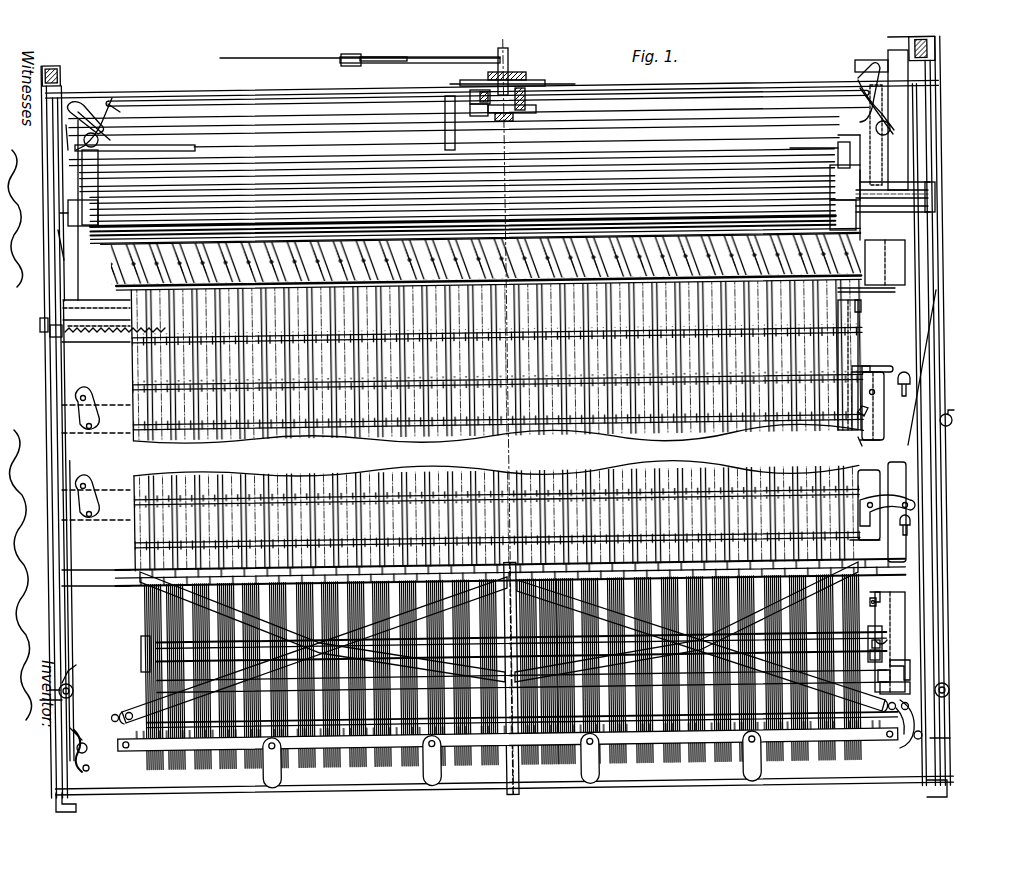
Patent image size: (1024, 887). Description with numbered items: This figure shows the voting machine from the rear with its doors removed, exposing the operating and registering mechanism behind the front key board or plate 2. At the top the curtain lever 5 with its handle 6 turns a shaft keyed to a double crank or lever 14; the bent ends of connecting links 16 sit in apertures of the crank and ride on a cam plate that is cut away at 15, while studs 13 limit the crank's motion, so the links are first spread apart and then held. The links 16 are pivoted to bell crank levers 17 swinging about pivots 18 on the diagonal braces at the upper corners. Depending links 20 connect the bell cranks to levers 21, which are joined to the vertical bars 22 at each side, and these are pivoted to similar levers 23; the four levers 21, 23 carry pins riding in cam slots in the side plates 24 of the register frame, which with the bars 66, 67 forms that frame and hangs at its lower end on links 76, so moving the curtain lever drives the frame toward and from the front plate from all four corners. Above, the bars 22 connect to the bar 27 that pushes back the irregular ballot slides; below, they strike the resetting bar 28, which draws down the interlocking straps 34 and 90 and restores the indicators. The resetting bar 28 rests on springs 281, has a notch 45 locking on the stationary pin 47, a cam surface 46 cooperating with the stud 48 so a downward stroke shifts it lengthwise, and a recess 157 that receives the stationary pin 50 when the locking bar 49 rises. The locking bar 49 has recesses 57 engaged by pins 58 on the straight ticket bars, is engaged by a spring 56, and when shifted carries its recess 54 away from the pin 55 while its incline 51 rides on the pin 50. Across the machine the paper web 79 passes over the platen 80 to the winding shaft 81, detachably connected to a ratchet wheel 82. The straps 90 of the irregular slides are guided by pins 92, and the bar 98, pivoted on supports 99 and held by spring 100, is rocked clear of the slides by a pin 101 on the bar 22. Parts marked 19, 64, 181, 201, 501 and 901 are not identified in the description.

The key board or plate 2 is at (330, 146).
The curtain lever 5 is at (468, 423).
The handle 6 is at (352, 76).
The studs 13 is at (527, 95).
The double crank or lever 14 is at (512, 115).
The cutaway portion 15 is at (540, 110).
The connecting rods or links 16 is at (392, 104).
The bell crank levers 17 is at (118, 124).
The pivot 18 is at (876, 126).
The rod 19 is at (138, 101).
The depending links 20 is at (920, 251).
The levers 21 is at (55, 355).
The vertically-extending rods or bars 22 is at (930, 355).
The levers 23 is at (70, 510).
The vertical sides or plates 24 is at (930, 410).
The bar 27 is at (706, 96).
The resetting bar 28 is at (504, 699).
The rods or straps 34 is at (150, 683).
The notch or recess 45 is at (55, 685).
The inclined or cam surface 46 is at (915, 724).
The stationary pin or roller 47 is at (74, 690).
The stud or collar 48 is at (950, 690).
The locking bar 49 is at (880, 610).
The stationary pin 50 is at (892, 663).
The incline 51 is at (870, 414).
The recess 54 is at (884, 592).
The pin 55 is at (893, 595).
The spring 56 is at (860, 405).
The recesses 57 is at (868, 536).
The pins 58 is at (849, 441).
The lever 64 is at (64, 348).
The plates or bars 66 is at (100, 578).
The plates or bars 67 is at (96, 311).
The links 76 is at (948, 740).
The paper web 79 is at (475, 219).
The platen 80 is at (98, 185).
The shaft 81 is at (80, 226).
The ratchet wheel 82 is at (938, 184).
The interlocking rods or straps 90 is at (178, 284).
The pins 92 is at (135, 267).
The bar 98 is at (457, 167).
The supports 99 is at (90, 160).
The spring 100 is at (195, 147).
The pin 101 is at (838, 157).
The recess 157 is at (900, 684).
The pin 181 is at (55, 252).
The block 201 is at (881, 167).
The springs 281 is at (90, 758).
The pin 501 is at (884, 648).
The spring 901 is at (904, 640).